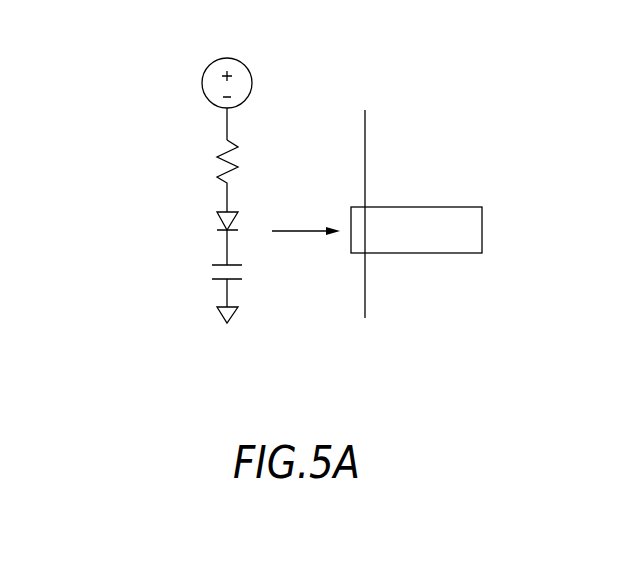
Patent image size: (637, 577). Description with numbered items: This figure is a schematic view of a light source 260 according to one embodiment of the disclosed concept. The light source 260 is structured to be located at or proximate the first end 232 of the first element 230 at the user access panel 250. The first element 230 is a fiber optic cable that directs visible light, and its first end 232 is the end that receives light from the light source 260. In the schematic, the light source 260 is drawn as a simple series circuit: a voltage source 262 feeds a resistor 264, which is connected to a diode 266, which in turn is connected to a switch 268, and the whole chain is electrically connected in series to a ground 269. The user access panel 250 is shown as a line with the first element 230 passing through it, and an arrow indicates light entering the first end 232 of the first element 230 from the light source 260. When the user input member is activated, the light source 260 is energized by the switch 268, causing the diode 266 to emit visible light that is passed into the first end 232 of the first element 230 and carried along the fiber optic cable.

The light source 260 is at (106, 88).
The voltage source 262 is at (212, 62).
The resistor 264 is at (222, 147).
The diode 266 is at (215, 222).
The switch 268 is at (212, 272).
The ground 269 is at (215, 312).
The user access panel 250 is at (364, 118).
The first element 230 is at (438, 207).
The first end 232 is at (341, 282).